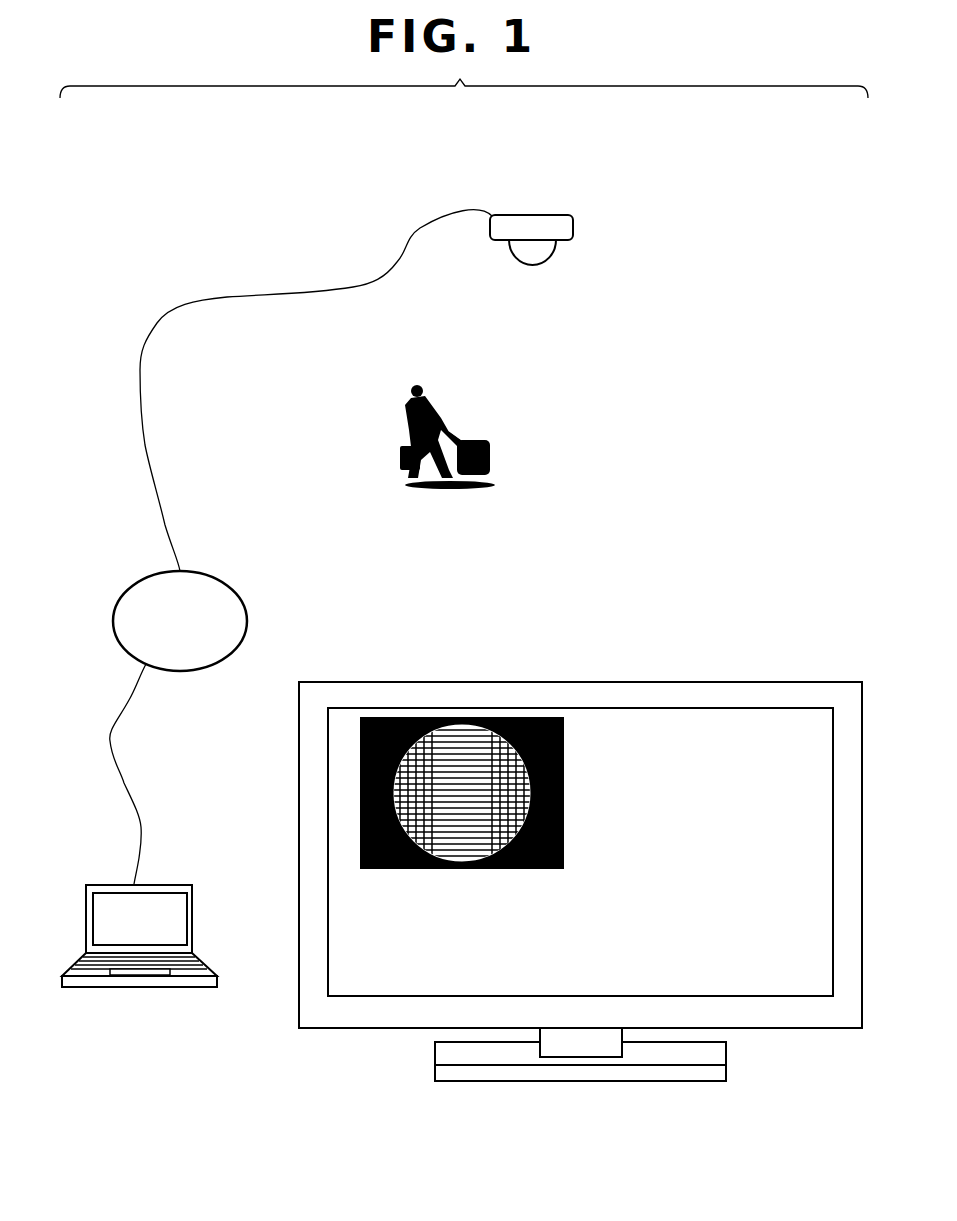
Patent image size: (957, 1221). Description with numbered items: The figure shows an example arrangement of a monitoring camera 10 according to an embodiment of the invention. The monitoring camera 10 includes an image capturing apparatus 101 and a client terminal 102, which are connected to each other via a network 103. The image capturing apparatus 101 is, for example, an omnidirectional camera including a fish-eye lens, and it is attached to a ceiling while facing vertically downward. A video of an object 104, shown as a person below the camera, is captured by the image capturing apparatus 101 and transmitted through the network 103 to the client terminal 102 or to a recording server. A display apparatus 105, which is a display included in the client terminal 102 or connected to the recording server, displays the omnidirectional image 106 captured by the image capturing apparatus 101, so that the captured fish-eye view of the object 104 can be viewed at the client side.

The monitoring camera 10 is at (713, 169).
The image capturing apparatus 101 is at (546, 214).
The client terminal 102 is at (172, 884).
The network 103 is at (222, 577).
The object 104 is at (434, 398).
The display apparatus 105 is at (587, 681).
The omnidirectional image 106 is at (462, 869).